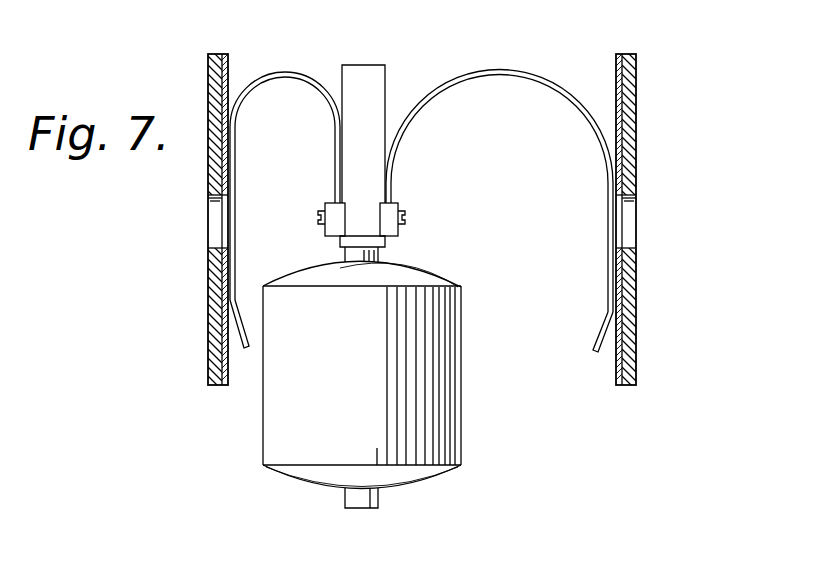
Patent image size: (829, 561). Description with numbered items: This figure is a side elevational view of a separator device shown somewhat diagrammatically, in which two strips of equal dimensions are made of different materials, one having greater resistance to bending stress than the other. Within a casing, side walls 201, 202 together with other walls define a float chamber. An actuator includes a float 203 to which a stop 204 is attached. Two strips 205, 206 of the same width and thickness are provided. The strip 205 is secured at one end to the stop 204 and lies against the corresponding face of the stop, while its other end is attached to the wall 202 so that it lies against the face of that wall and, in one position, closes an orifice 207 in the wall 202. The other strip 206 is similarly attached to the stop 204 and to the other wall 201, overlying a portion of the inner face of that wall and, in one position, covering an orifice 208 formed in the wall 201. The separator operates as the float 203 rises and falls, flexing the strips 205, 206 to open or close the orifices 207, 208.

The side wall 201 is at (212, 360).
The side wall 202 is at (632, 351).
The float 203 is at (447, 388).
The stop 204 is at (382, 88).
The strip 205 is at (554, 88).
The strip 206 is at (306, 52).
The orifice 207 is at (630, 200).
The orifice 208 is at (213, 200).